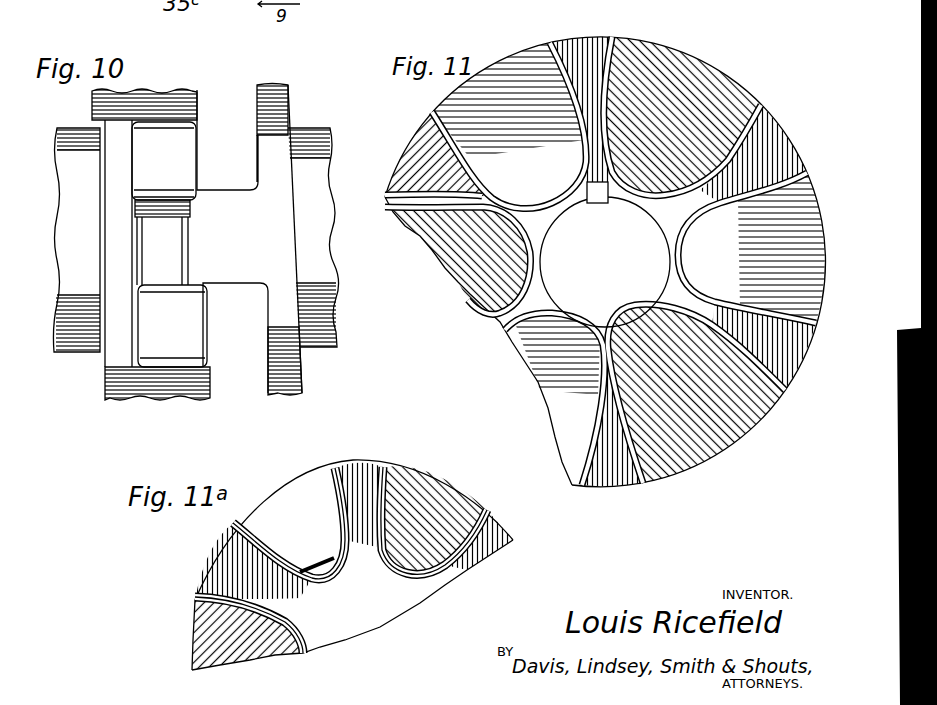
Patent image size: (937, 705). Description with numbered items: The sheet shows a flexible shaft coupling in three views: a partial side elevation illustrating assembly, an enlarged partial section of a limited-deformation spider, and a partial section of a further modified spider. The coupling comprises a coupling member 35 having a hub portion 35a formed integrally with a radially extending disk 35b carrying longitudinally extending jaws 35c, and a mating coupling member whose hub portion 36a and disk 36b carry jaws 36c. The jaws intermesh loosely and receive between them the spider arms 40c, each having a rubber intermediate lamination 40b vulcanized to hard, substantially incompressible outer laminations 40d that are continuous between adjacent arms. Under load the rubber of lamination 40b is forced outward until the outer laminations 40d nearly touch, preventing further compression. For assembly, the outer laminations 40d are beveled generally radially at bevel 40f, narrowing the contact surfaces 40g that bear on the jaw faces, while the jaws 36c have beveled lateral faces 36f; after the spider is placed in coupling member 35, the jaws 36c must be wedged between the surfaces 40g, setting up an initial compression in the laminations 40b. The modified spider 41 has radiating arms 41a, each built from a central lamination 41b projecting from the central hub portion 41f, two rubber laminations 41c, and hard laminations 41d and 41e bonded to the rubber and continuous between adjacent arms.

In FIG. 10, the coupling member 35 is at (150, 254).
In FIG. 10, the hub portion 35a is at (70, 142).
In FIG. 10, the radially extending disk 35b is at (108, 390).
In FIG. 10, the jaw 35c is at (162, 108).
In FIG. 11, the jaw 35c is at (442, 110).
In FIG. 10, the hub portion 36a is at (327, 260).
In FIG. 10, the radially extending disk 36b is at (302, 373).
In FIG. 10, the jaw 36c is at (228, 232).
In FIG. 11, the jaw 36c is at (693, 66).
In FIG. 10, the beveled lateral face 36f is at (205, 180).
In FIG. 10, the intermediate lamination 40b is at (190, 142).
In FIG. 11, the intermediate lamination 40b is at (590, 33).
In FIG. 10, the spider arm 40c is at (192, 158).
In FIG. 11, the spider arm 40c is at (773, 133).
In FIG. 10, the outer lamination 40d is at (196, 128).
In FIG. 11, the outer lamination 40d is at (630, 43).
In FIG. 10, the bevel 40f is at (193, 113).
In FIG. 10, the contact surface 40g is at (165, 283).
In FIG. 11A, the spider 41 is at (340, 630).
In FIG. 11A, the radiating arm 41a is at (370, 461).
In FIG. 11A, the central lamination 41b is at (348, 465).
In FIG. 11A, the rubber lamination 41c is at (232, 525).
In FIG. 11A, the hard lamination 41d is at (477, 510).
In FIG. 11A, the hard lamination 41e is at (490, 514).
In FIG. 11A, the central hub portion 41f is at (380, 620).